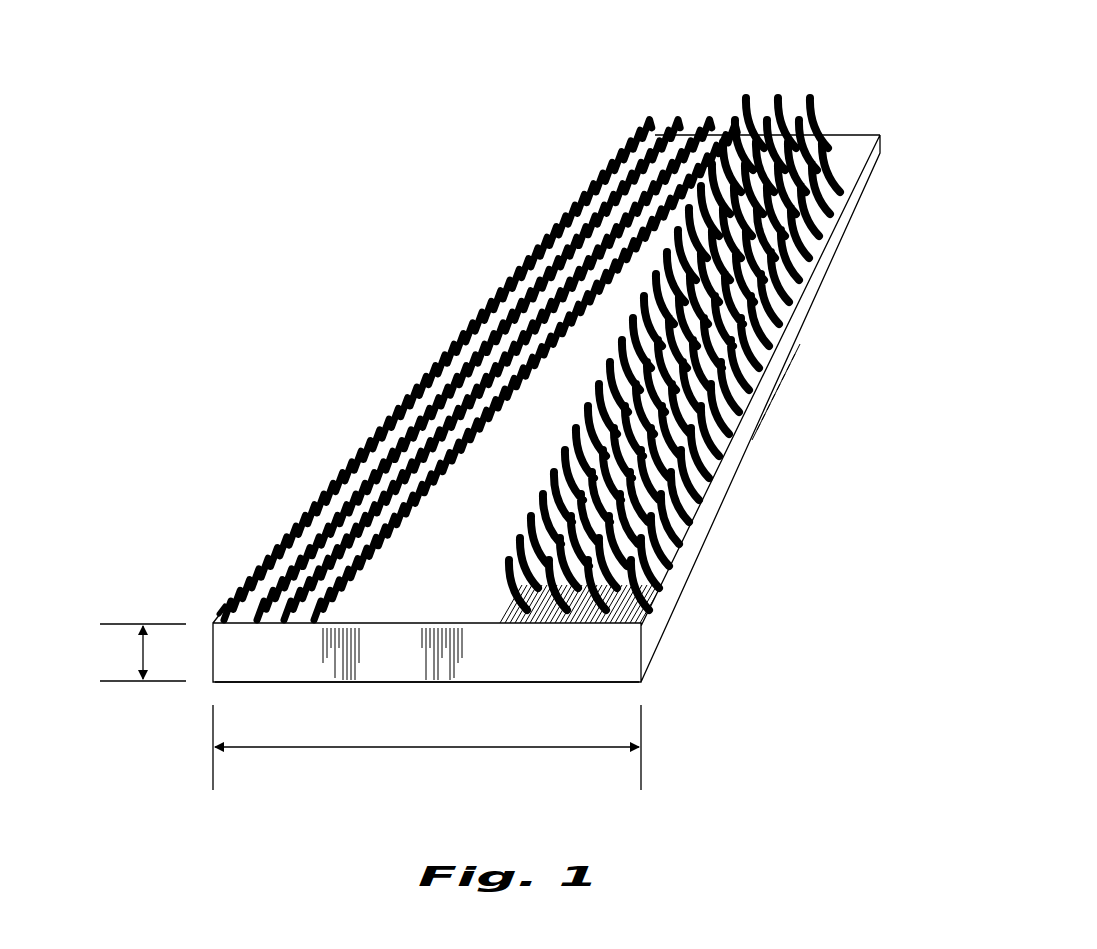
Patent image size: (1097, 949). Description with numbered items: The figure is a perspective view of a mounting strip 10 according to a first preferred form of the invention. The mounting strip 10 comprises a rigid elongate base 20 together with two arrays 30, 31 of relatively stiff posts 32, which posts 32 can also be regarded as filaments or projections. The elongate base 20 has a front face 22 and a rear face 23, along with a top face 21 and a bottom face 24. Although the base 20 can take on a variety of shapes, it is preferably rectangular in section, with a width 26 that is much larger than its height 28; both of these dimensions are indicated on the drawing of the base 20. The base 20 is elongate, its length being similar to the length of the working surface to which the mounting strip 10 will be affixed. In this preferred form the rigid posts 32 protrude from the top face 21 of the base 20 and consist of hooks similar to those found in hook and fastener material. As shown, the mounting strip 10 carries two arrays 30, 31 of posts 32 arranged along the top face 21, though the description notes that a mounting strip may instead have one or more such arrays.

The mounting strip 10 is at (335, 297).
The rigid elongate base 20 is at (784, 413).
The top face 21 is at (424, 590).
The front face 22 is at (722, 480).
The rear face 23 is at (222, 587).
The bottom face 24 is at (570, 686).
The width 26 is at (487, 750).
The height 28 is at (143, 652).
The array of posts 30 is at (668, 110).
The array of posts 31 is at (845, 90).
The posts 32 is at (657, 525).